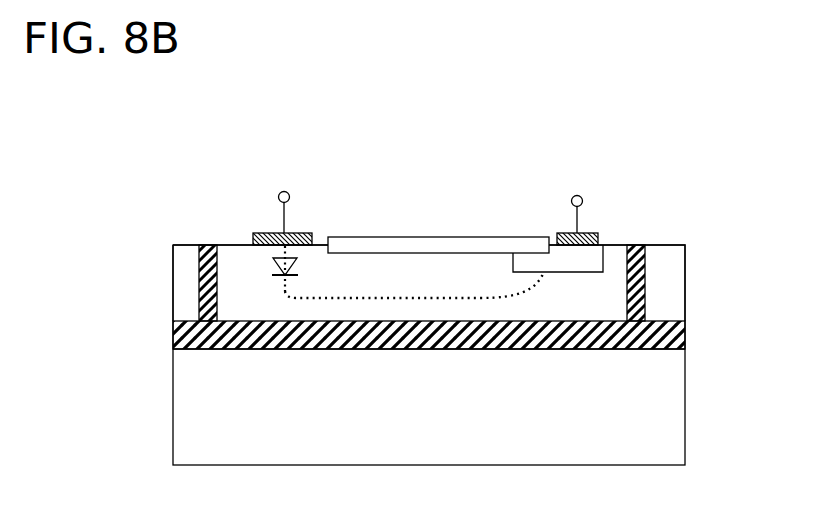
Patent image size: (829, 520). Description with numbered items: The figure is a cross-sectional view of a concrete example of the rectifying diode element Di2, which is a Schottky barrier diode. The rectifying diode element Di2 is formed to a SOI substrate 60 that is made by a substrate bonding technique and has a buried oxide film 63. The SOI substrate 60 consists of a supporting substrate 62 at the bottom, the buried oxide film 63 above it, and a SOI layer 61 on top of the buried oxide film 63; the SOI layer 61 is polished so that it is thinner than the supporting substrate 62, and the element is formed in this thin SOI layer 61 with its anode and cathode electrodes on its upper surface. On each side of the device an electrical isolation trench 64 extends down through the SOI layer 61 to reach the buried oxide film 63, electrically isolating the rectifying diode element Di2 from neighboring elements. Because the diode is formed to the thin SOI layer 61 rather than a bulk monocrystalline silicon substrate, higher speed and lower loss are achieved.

The SOI substrate 60 is at (755, 245).
The SOI layer 61 is at (673, 278).
The supporting substrate 62 is at (675, 413).
The buried oxide film 63 is at (675, 338).
The electrical isolation trench 64 is at (207, 244).
The rectifying diode element Di2 is at (254, 129).